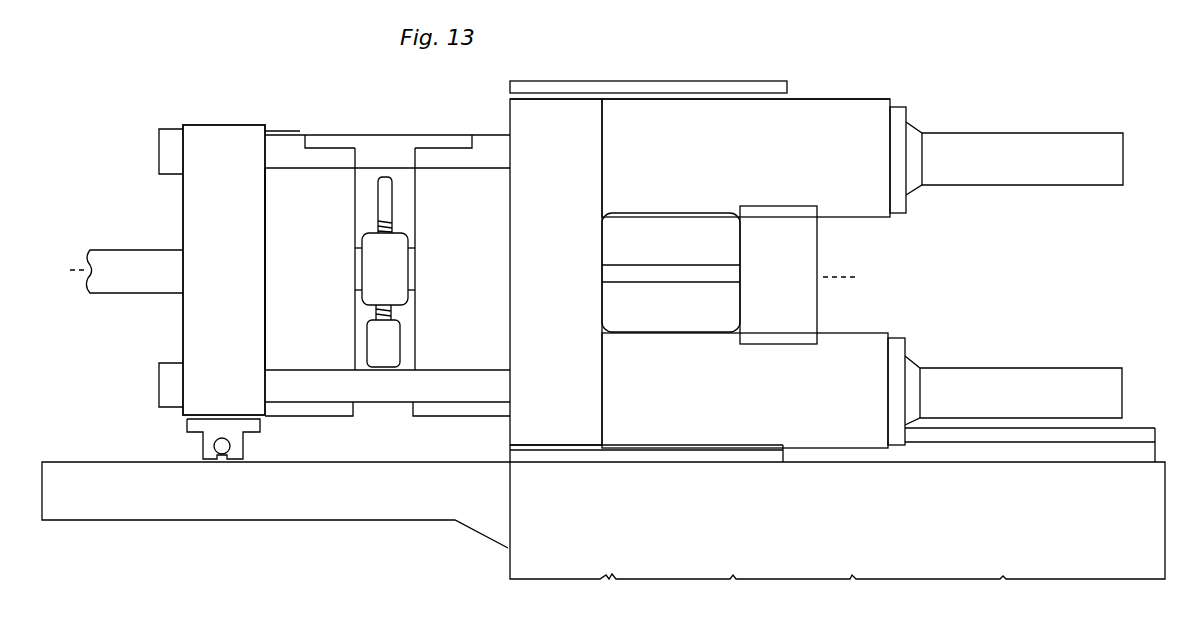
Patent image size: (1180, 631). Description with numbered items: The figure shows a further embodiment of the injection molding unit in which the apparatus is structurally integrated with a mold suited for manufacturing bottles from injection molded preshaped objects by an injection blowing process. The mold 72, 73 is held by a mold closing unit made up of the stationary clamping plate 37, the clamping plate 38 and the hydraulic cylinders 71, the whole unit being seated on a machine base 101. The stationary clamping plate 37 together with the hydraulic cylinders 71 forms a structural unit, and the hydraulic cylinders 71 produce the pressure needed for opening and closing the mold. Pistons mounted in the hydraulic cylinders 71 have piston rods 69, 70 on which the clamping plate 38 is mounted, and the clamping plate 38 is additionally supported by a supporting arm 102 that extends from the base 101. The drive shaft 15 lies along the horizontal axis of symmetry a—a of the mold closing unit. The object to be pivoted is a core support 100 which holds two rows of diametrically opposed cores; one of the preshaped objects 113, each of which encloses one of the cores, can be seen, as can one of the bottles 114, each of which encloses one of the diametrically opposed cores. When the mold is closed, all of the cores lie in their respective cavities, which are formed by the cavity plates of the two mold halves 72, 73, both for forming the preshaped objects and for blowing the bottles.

The clamping plate 38 is at (228, 136).
The drive shaft 15 is at (126, 286).
The mold half 73 is at (293, 301).
The piston rod 70 is at (336, 140).
The preshaped object 113 is at (388, 191).
The core support 100 is at (390, 296).
The bottle 114 is at (385, 338).
The piston rod 69 is at (388, 386).
The mold half 72 is at (495, 232).
The hydraulic cylinder 71 is at (965, 145).
The stationary clamping plate 37 is at (543, 428).
The supporting arm 102 is at (419, 500).
The machine base 101 is at (537, 563).